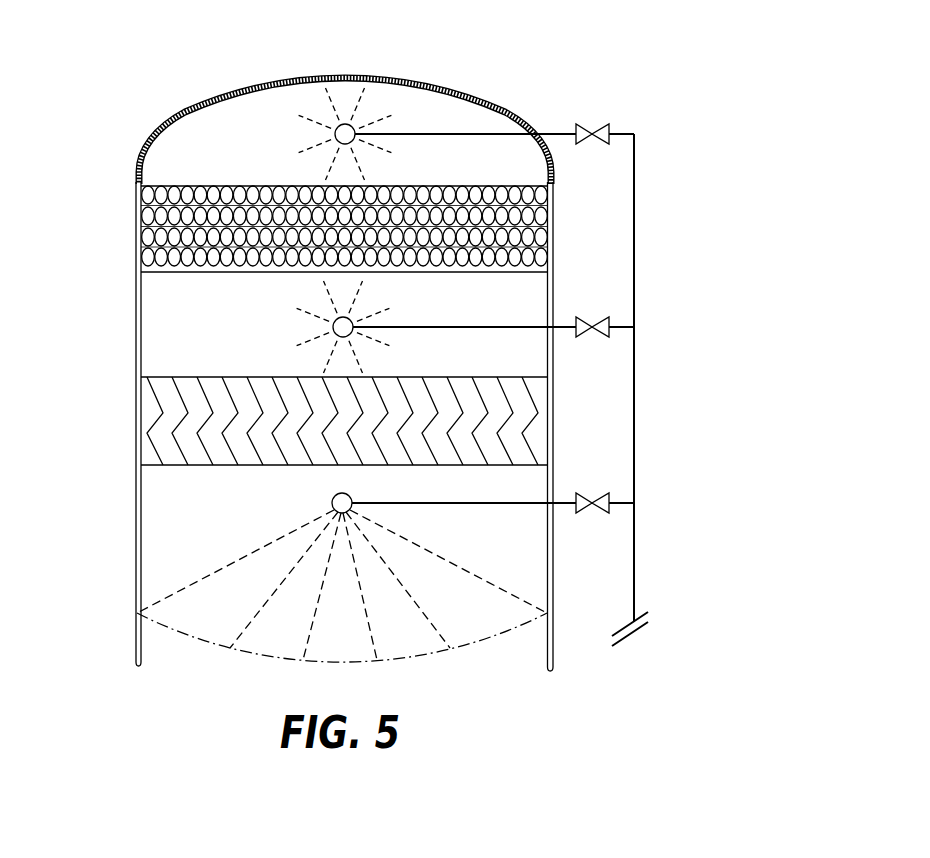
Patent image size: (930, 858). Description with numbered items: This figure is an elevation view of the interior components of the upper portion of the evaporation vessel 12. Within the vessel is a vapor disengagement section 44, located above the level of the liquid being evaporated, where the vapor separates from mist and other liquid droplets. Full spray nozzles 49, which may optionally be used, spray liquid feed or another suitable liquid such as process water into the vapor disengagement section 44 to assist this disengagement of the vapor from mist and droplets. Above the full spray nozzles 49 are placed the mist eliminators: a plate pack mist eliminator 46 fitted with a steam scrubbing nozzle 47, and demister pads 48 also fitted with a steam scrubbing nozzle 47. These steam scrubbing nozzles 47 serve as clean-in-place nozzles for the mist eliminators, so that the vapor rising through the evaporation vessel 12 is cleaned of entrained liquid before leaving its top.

The evaporation vessel 12 is at (134, 530).
The vapor disengagement section 44 is at (540, 662).
The plate pack mist eliminator 46 is at (153, 441).
The steam scrubbing nozzle 47 is at (332, 126).
The demister pads 48 is at (153, 222).
The full spray nozzles 49 is at (333, 498).